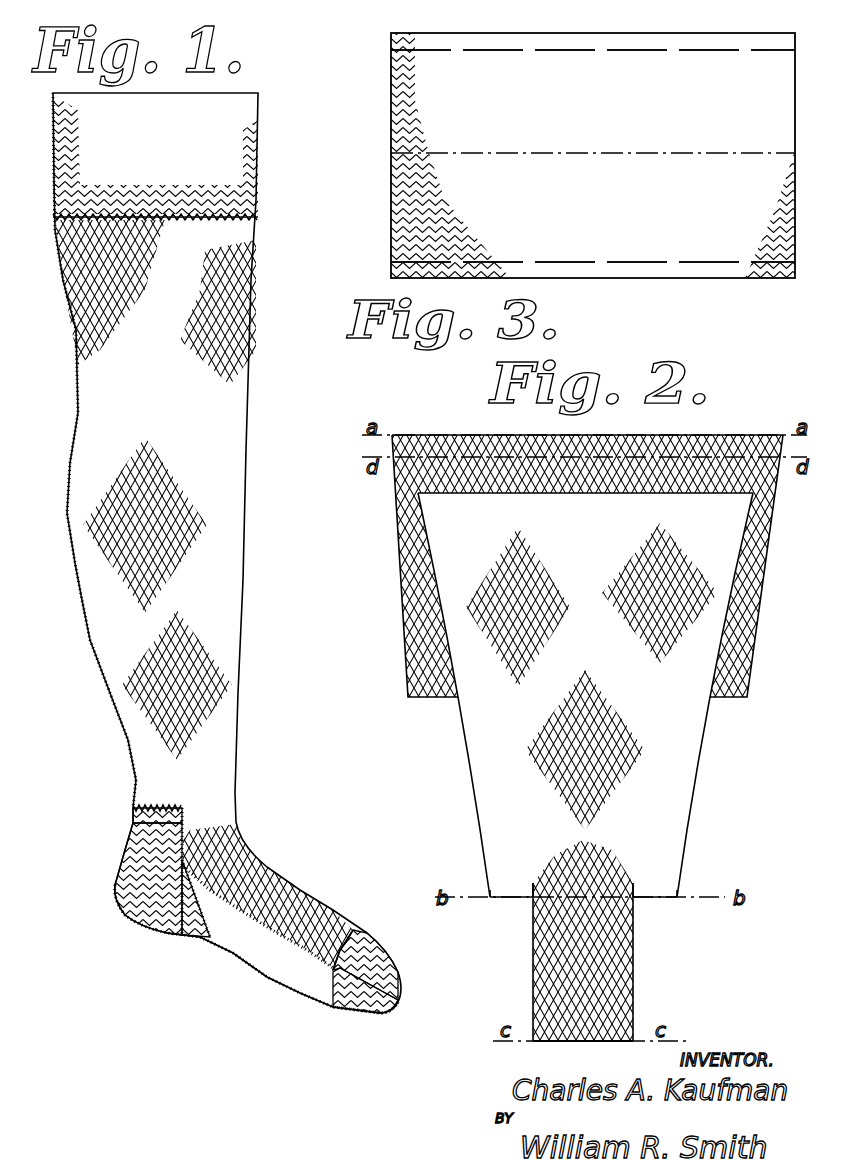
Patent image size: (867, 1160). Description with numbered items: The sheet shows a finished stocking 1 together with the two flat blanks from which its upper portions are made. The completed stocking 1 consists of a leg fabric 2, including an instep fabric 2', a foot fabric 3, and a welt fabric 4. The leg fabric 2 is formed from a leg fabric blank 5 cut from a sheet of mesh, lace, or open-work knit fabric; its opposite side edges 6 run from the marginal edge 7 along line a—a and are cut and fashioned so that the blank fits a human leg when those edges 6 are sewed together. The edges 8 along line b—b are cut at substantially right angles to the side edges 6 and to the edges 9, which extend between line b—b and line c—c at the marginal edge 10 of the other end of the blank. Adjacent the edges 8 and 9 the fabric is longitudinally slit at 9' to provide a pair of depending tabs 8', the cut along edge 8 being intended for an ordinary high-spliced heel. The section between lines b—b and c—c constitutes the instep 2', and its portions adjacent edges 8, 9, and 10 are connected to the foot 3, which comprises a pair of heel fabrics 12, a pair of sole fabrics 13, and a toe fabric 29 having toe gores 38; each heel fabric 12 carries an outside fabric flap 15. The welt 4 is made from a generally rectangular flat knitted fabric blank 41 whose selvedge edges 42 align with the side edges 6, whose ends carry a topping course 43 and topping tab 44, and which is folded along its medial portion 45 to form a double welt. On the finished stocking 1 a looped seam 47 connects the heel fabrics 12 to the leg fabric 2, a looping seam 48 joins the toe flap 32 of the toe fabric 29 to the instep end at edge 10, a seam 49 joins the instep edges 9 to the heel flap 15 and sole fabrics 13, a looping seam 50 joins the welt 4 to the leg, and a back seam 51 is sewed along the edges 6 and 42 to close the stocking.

In FIG. 1, the stocking 1 is at (256, 554).
In FIG. 1, the leg fabric 2 is at (168, 490).
In FIG. 2, the leg fabric 2 is at (549, 676).
In FIG. 1, the instep fabric 2' is at (268, 896).
In FIG. 2, the instep fabric 2' is at (619, 940).
In FIG. 1, the foot fabric 3 is at (237, 960).
In FIG. 1, the welt fabric 4 is at (232, 155).
In FIG. 3, the welt fabric 4 is at (385, 228).
In FIG. 2, the leg fabric blank 5 is at (494, 800).
In FIG. 2, the side edges 6 is at (465, 715).
In FIG. 2, the marginal edge 7 is at (450, 435).
In FIG. 2, the edges 8 is at (579, 923).
In FIG. 2, the depending tabs 8' is at (587, 866).
In FIG. 2, the edges 9 is at (582, 962).
In FIG. 2, the longitudinal slits 9' is at (582, 863).
In FIG. 2, the marginal edge 10 is at (553, 1041).
In FIG. 1, the heel fabric 12 is at (137, 878).
In FIG. 1, the sole fabric 13 is at (310, 987).
In FIG. 1, the fabric flap 15 is at (180, 819).
In FIG. 1, the toe fabric 29 is at (383, 972).
In FIG. 1, the flap of toe fabric 32 is at (375, 947).
In FIG. 1, the toe gores 38 is at (393, 1003).
In FIG. 3, the flat knitted fabric blank 41 is at (405, 175).
In FIG. 3, the selvedge edges 42 is at (392, 117).
In FIG. 3, the topping course 43 is at (440, 47).
In FIG. 3, the topping tab 44 is at (402, 48).
In FIG. 3, the medial portion 45 is at (618, 130).
In FIG. 1, the looped seam 47 is at (150, 807).
In FIG. 1, the looping seam 48 is at (350, 937).
In FIG. 1, the seam 49 is at (257, 917).
In FIG. 1, the looping seam 50 is at (223, 220).
In FIG. 1, the back seam 51 is at (78, 416).